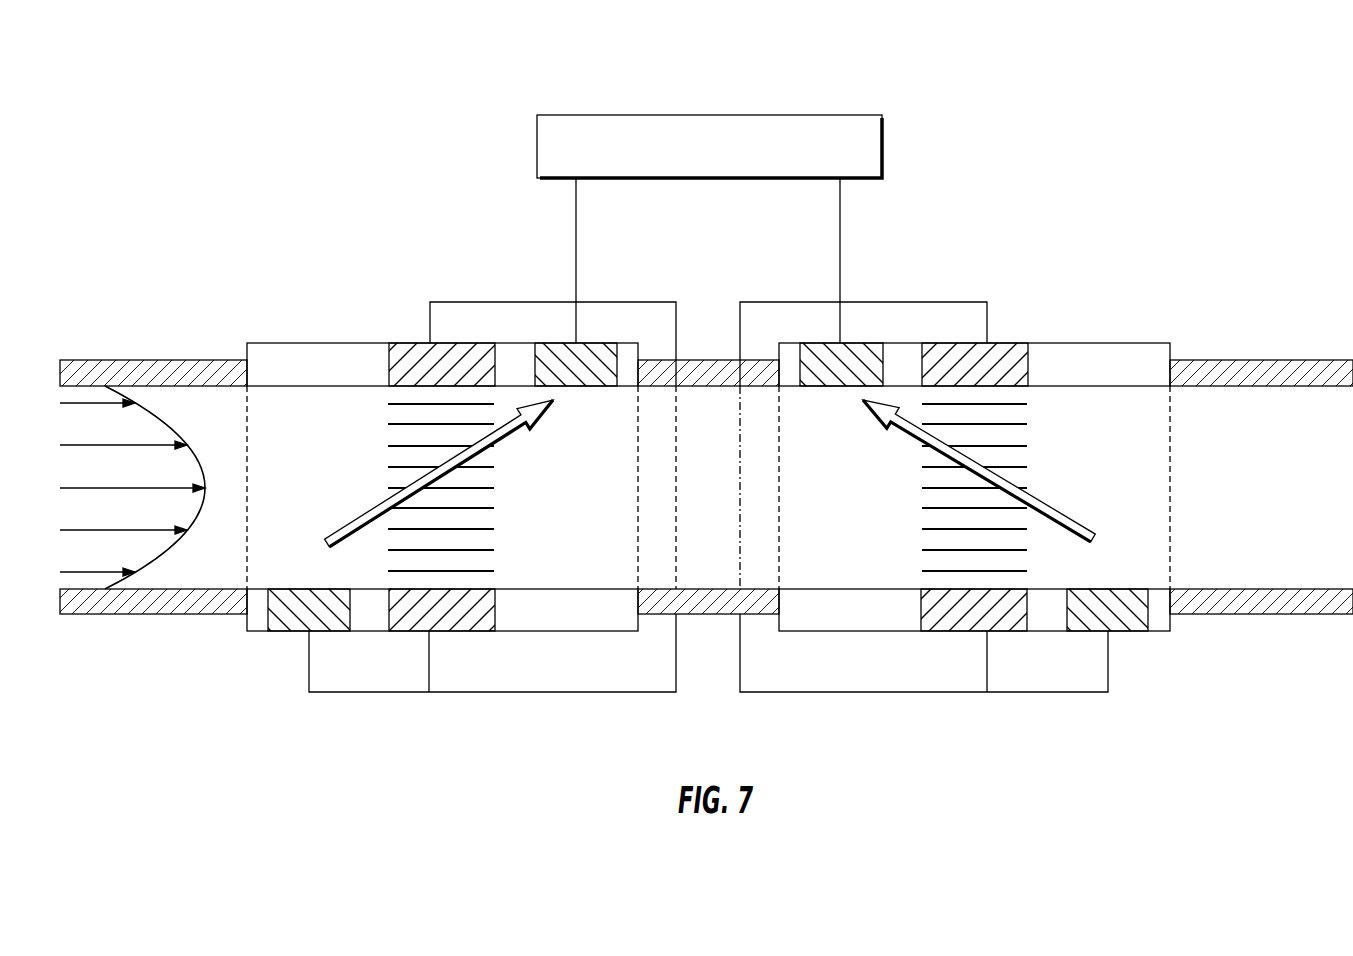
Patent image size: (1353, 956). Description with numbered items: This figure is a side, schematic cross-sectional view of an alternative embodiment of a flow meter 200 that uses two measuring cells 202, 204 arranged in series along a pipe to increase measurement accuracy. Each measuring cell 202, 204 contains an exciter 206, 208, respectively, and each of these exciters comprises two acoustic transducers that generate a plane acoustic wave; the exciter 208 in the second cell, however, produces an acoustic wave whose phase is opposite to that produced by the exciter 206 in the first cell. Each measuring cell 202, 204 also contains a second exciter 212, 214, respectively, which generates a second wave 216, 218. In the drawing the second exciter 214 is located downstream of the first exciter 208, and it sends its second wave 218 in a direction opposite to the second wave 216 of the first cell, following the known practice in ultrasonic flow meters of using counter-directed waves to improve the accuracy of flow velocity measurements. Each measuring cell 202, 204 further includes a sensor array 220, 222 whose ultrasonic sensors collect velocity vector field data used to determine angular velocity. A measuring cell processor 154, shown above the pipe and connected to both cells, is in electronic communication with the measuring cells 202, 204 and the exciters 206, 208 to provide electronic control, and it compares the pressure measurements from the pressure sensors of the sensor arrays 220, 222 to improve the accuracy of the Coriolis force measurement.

The measuring cell processor 154 is at (858, 115).
The flow meter 200 is at (1030, 143).
The measuring cell 202 is at (295, 333).
The measuring cell 204 is at (1120, 330).
The exciter 206 is at (418, 333).
The exciter 208 is at (1013, 312).
The second exciter 212 is at (297, 633).
The second exciter 214 is at (1130, 623).
The second wave 216 is at (362, 520).
The second wave 218 is at (908, 428).
The sensor array 220 is at (598, 340).
The sensor array 222 is at (860, 337).